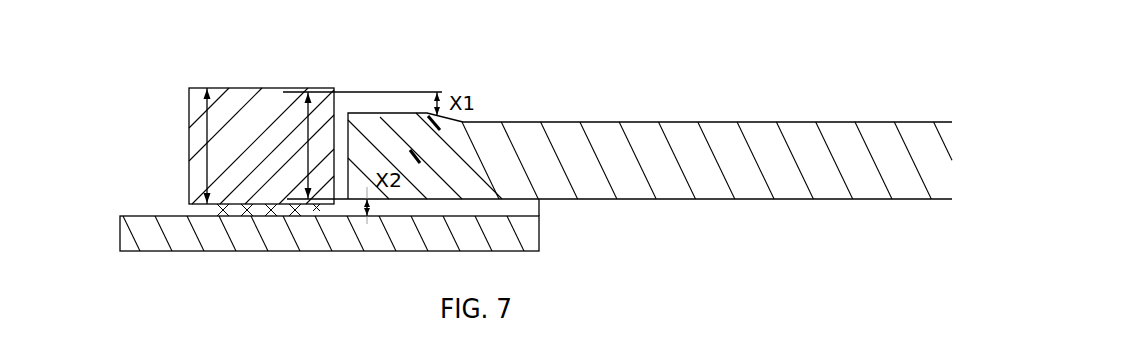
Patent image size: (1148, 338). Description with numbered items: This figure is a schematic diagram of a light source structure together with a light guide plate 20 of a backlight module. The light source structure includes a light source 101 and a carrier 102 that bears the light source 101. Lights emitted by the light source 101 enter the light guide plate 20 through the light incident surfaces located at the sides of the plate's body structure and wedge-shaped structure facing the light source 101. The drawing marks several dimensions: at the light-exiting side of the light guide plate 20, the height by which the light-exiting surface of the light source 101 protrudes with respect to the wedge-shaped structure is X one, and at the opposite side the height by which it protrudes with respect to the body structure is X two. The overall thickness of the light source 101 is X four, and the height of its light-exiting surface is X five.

The light guide plate 20 is at (585, 140).
The light source 101 is at (188, 167).
The carrier 102 is at (150, 240).